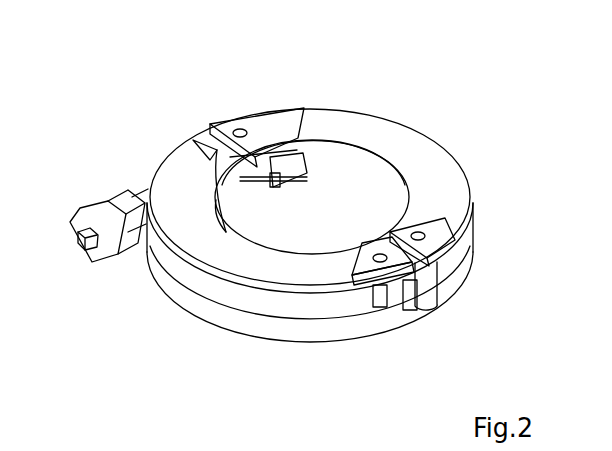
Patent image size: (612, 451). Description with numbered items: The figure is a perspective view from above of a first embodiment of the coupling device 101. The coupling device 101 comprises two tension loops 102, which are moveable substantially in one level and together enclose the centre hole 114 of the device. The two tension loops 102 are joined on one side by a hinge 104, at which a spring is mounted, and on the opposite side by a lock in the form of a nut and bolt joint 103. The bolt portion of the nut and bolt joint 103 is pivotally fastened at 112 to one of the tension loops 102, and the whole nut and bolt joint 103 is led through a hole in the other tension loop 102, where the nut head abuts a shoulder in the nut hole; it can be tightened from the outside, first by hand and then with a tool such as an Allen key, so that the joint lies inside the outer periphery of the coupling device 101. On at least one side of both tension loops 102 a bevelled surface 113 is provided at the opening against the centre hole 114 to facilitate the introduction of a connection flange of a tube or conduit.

The coupling device 101 is at (310, 219).
The tension loops 102 is at (357, 130).
The nut and bolt joint 103 is at (127, 233).
The hinge 104 is at (420, 278).
The pivotal fastening 112 is at (230, 126).
The bevelled surface 113 is at (195, 150).
The centre hole 114 is at (324, 160).